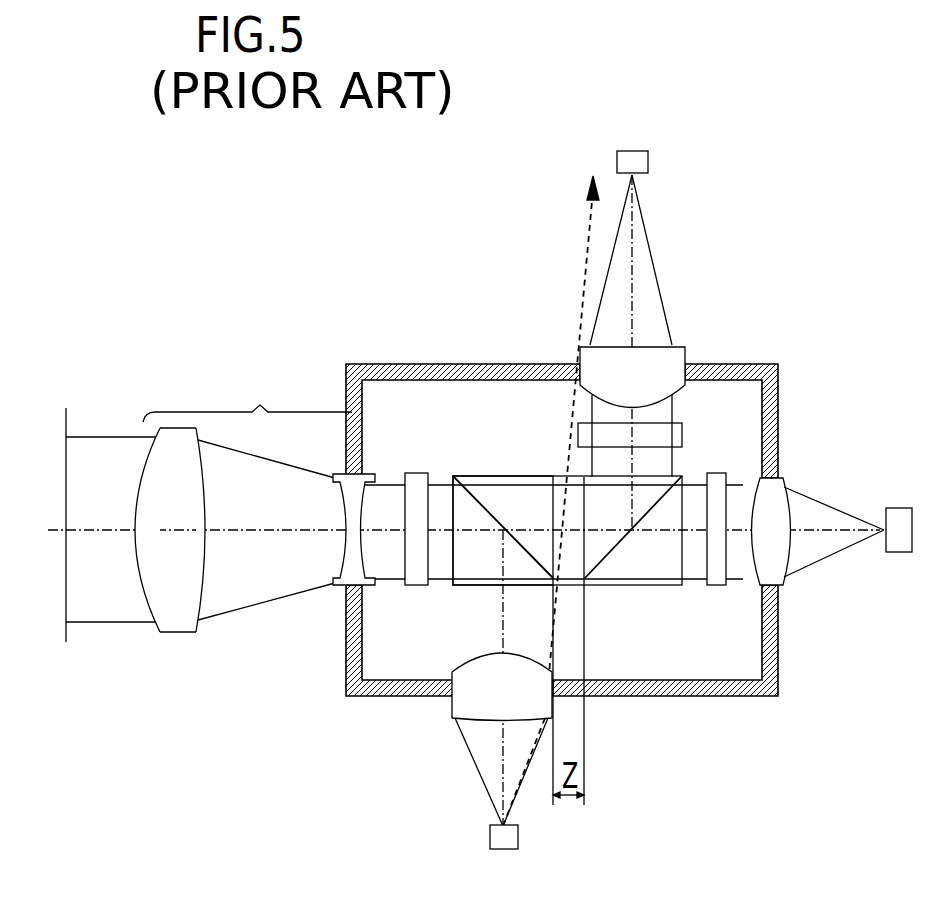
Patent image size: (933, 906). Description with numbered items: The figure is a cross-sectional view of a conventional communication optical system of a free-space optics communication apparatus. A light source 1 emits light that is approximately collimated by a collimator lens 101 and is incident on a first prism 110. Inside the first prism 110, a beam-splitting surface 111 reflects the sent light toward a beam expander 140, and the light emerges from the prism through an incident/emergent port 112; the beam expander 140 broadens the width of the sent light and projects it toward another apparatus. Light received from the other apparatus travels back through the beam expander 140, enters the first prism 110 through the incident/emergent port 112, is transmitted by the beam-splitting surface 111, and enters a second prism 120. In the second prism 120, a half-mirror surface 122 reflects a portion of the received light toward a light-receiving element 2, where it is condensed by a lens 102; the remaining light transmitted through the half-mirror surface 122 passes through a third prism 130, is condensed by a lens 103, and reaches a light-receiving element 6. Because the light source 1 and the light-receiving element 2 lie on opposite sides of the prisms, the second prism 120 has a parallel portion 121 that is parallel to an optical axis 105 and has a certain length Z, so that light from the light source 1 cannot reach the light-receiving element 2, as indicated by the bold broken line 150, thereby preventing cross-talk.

The light source 1 is at (490, 838).
The light-receiving element 2 is at (648, 153).
The light-receiving element 6 is at (895, 506).
The collimator lens 101 is at (460, 700).
The lens 102 is at (672, 355).
The lens 103 is at (778, 498).
The optical axis 105 is at (258, 525).
The first prism 110 is at (465, 560).
The beam-splitting surface 111 is at (527, 550).
The incident/emergent port 112 is at (454, 484).
The second prism 120 is at (512, 500).
The parallel portion 121 is at (573, 583).
The half-mirror surface 122 is at (622, 547).
The third prism 130 is at (678, 477).
The beam expander 140 is at (243, 499).
The bold broken line 150 is at (551, 496).